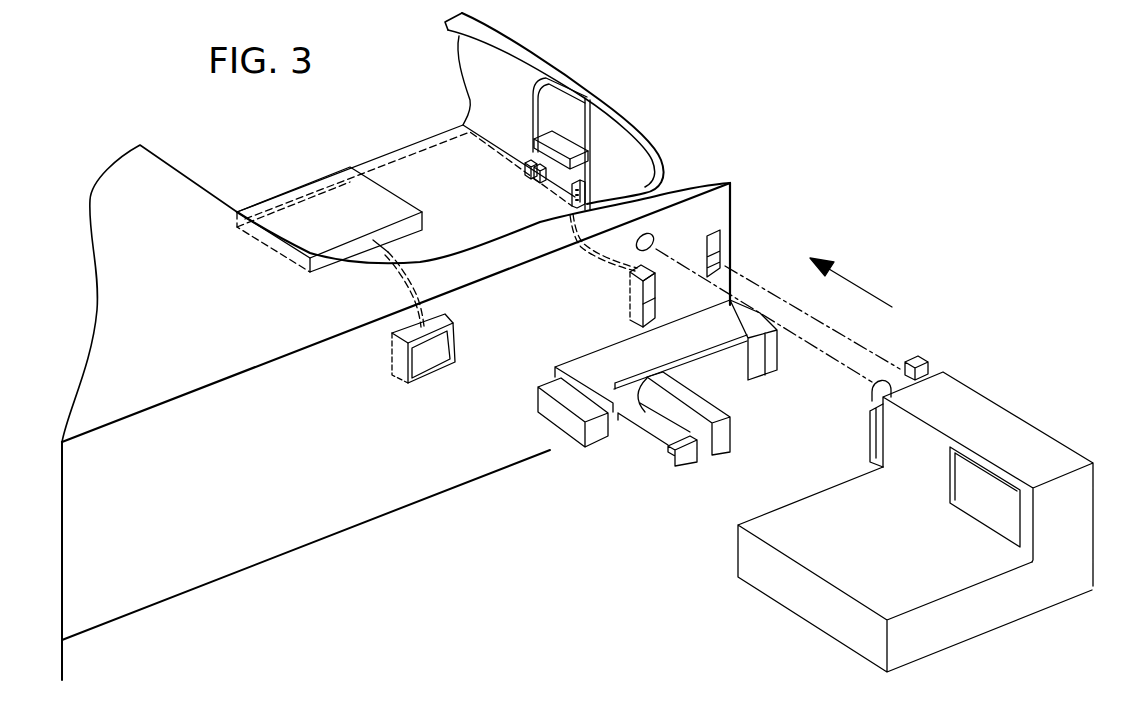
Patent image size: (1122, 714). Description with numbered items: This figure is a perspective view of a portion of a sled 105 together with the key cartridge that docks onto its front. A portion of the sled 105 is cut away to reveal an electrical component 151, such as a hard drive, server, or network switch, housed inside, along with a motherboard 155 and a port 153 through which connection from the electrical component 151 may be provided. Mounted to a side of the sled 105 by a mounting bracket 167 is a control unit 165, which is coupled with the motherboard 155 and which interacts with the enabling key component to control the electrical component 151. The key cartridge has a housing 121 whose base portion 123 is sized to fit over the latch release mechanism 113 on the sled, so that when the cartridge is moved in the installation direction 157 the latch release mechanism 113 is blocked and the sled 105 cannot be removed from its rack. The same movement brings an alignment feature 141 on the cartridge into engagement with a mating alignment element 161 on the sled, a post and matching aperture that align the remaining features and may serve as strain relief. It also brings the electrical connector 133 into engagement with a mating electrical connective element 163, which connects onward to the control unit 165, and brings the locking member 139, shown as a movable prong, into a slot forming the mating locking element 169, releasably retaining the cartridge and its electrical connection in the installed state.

The sled 105 is at (257, 552).
The latch release mechanism 113 is at (733, 438).
The housing 121 is at (835, 627).
The base portion 123 is at (962, 627).
The electrical connector 133 is at (870, 447).
The locking member 139 is at (912, 360).
The alignment feature 141 is at (873, 383).
The electrical component 151 is at (340, 192).
The port 153 is at (430, 377).
The motherboard 155 is at (423, 153).
The installation direction 157 is at (853, 284).
The mating alignment element 161 is at (653, 242).
The mating electrical connective element 163 is at (643, 302).
The control unit 165 is at (563, 178).
The mounting bracket 167 is at (577, 115).
The mating locking element 169 is at (718, 250).